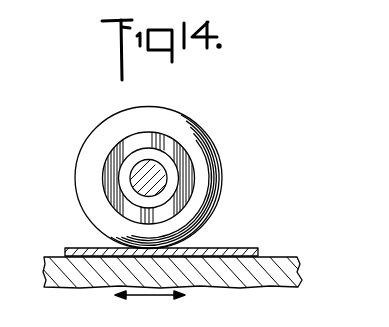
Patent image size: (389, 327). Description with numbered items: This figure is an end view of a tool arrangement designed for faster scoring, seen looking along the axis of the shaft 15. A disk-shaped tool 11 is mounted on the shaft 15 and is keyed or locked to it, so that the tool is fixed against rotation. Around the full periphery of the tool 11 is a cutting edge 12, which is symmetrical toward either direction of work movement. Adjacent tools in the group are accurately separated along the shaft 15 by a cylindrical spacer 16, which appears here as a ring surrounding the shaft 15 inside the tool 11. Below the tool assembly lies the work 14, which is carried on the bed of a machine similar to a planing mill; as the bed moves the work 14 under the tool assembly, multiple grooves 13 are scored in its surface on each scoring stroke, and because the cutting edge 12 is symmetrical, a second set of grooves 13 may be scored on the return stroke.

The tool 11 is at (201, 128).
The cutting edge 12 is at (162, 107).
The grooves 13 is at (228, 247).
The work 14 is at (71, 247).
The shaft 15 is at (131, 176).
The cylindrical spacer 16 is at (191, 162).